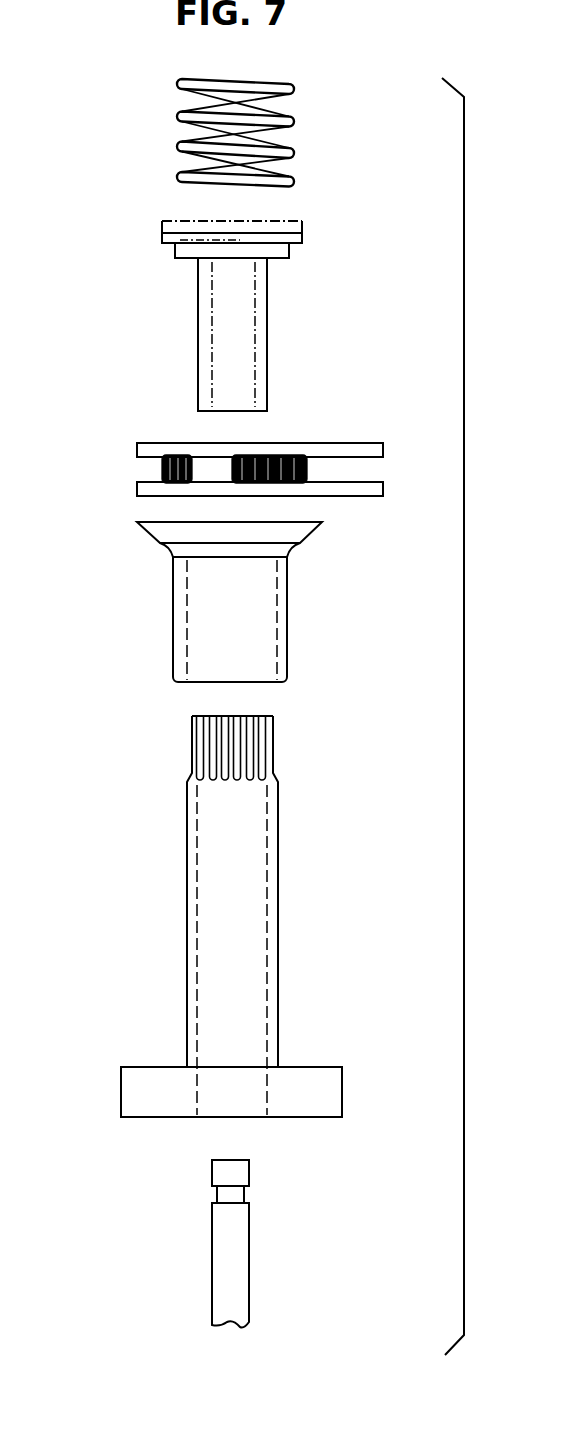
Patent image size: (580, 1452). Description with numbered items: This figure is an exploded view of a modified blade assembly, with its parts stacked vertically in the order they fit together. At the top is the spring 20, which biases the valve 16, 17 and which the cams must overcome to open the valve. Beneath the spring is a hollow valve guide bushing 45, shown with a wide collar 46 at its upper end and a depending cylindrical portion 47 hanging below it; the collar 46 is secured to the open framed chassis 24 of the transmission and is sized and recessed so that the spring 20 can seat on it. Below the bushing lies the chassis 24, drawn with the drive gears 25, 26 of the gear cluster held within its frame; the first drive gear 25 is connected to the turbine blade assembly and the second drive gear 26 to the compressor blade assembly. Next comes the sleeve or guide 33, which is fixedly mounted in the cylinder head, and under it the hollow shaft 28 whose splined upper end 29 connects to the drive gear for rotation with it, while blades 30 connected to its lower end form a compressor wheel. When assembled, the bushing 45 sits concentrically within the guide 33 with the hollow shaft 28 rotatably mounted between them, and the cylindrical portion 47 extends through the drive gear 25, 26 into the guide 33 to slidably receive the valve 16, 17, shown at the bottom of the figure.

The spring 20 is at (178, 135).
The collar 46 is at (298, 228).
The valve guide bushing 45 is at (198, 325).
The depending cylindrical portion 47 is at (255, 335).
The open framed chassis 24 is at (215, 444).
The first drive gear 25 is at (148, 470).
The second drive gear 26 is at (269, 469).
The sleeve or guide 33 is at (277, 608).
The splined upper end 29 is at (275, 740).
The hollow shaft 28 is at (257, 906).
The blades 30 is at (286, 1086).
The valve 16 is at (182, 1243).
The valve 17 is at (230, 1173).